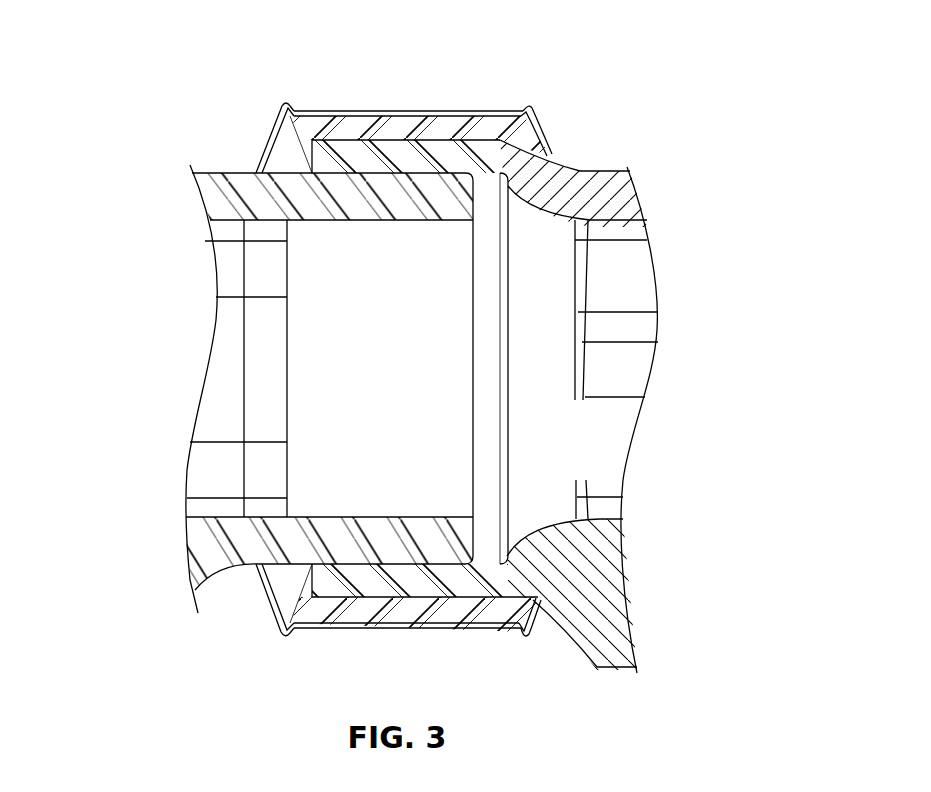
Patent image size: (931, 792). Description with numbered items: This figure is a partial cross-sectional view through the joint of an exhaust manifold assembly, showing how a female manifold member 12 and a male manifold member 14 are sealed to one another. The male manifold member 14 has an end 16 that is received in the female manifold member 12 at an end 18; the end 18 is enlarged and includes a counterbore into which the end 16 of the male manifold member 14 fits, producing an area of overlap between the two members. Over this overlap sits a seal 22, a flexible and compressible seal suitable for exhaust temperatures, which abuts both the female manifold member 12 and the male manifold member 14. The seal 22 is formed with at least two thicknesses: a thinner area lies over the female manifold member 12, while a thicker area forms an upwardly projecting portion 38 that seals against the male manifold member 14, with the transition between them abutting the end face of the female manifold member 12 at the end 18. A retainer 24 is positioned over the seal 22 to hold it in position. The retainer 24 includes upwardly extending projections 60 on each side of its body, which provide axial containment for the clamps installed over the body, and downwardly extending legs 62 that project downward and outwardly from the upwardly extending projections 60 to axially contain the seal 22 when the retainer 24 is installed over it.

The female manifold member 12 is at (597, 588).
The male manifold member 14 is at (213, 547).
The end 16 is at (476, 208).
The end 18 is at (315, 158).
The seal 22 is at (347, 128).
The retainer 24 is at (460, 111).
The upwardly projecting portion 38 is at (278, 137).
The upwardly extending projections 60 is at (528, 104).
The downwardly extending legs 62 is at (550, 142).